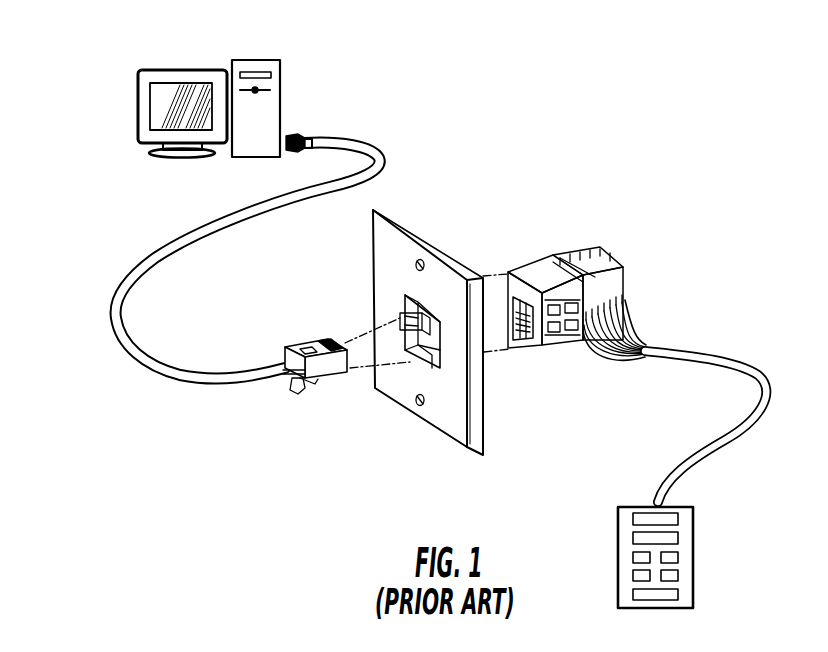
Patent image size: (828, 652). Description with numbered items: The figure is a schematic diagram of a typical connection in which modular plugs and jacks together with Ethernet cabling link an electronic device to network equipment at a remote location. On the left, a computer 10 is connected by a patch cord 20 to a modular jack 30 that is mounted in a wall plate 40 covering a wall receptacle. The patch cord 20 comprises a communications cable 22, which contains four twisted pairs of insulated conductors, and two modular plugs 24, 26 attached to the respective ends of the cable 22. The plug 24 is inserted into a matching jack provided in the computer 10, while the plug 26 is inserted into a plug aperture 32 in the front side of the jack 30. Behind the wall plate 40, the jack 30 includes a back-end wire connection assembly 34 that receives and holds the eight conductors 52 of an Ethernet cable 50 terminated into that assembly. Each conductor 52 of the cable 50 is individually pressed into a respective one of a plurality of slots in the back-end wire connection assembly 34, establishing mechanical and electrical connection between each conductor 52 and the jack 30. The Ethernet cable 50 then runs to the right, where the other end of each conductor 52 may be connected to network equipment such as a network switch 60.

The computer 10 is at (245, 60).
The patch cord 20 is at (120, 250).
The communications cable 22 is at (125, 343).
The RJ-45 plug 24 is at (294, 133).
The RJ-45 plug 26 is at (302, 342).
The RJ-45 jack 30 is at (538, 268).
The plug aperture 32 is at (520, 332).
The back-end wire connection assembly 34 is at (625, 310).
The wall plate 40 is at (482, 407).
The Ethernet cable 50 is at (682, 358).
The conductors 52 is at (612, 364).
The network switch 60 is at (695, 545).